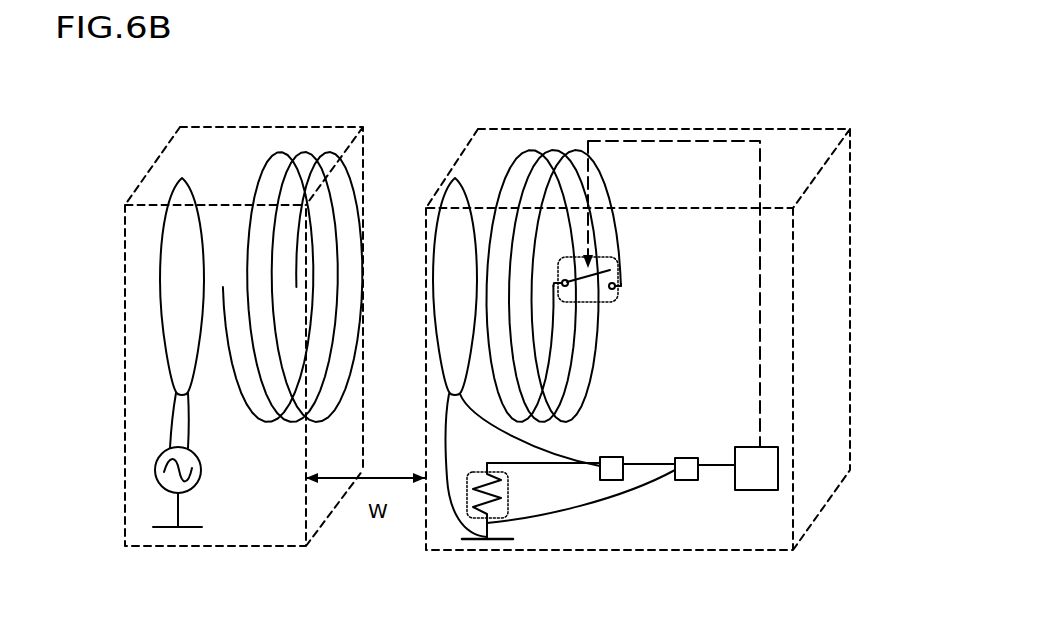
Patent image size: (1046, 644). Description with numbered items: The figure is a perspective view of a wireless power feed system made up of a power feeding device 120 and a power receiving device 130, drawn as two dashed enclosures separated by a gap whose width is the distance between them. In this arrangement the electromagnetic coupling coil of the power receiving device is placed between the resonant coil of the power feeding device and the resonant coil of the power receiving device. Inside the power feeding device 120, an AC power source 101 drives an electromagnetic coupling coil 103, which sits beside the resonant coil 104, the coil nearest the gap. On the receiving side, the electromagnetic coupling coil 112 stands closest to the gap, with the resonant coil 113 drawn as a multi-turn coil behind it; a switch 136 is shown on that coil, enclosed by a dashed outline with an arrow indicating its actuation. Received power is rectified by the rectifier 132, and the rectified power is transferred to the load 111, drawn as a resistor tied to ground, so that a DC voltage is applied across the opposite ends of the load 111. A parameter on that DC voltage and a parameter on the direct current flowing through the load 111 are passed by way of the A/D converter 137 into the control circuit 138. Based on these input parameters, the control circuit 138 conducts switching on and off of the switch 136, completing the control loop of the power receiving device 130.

The AC power source 101 is at (157, 474).
The electromagnetic coupling coil 103 is at (182, 178).
The resonant coil 104 is at (305, 152).
The load 111 is at (467, 478).
The electromagnetic coupling coil 112 is at (455, 178).
The resonant coil 113 is at (533, 150).
The power feeding device 120 is at (288, 532).
The power receiving device 130 is at (782, 592).
The rectifier 132 is at (612, 457).
The switch 136 is at (656, 265).
The A/D converter 137 is at (686, 481).
The control circuit 138 is at (760, 490).